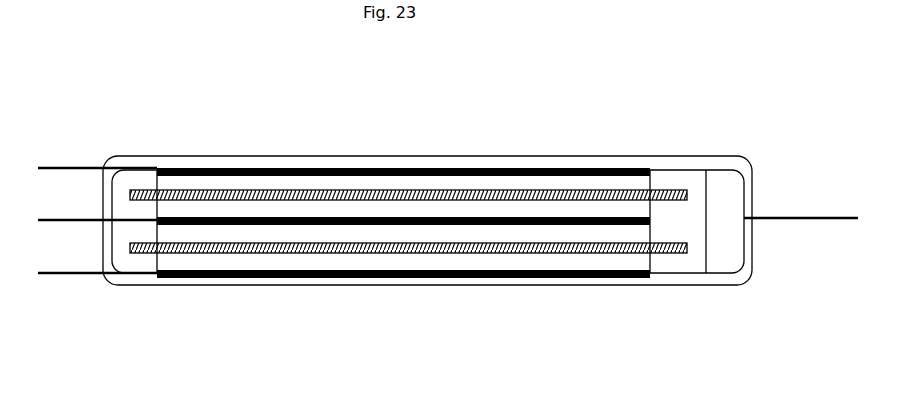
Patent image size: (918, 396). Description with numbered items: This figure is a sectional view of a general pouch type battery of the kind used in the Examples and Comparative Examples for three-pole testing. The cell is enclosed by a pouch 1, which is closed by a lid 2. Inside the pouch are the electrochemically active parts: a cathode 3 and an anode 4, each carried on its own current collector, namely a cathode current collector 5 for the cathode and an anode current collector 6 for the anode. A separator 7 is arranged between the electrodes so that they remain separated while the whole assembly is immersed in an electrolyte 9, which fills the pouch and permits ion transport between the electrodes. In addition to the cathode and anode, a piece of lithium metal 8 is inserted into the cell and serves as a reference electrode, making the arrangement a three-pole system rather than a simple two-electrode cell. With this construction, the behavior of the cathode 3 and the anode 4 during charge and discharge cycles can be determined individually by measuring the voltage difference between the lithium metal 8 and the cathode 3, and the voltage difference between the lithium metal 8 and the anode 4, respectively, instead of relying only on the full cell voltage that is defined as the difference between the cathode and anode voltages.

The pouch 1 is at (687, 285).
The lid 2 is at (445, 221).
The cathode 3 is at (213, 186).
The anode 4 is at (540, 208).
The cathode current collector 5 is at (249, 168).
The anode current collector 6 is at (578, 217).
The separator 7 is at (396, 186).
The lithium metal 8 is at (723, 198).
The electrolyte 9 is at (677, 182).